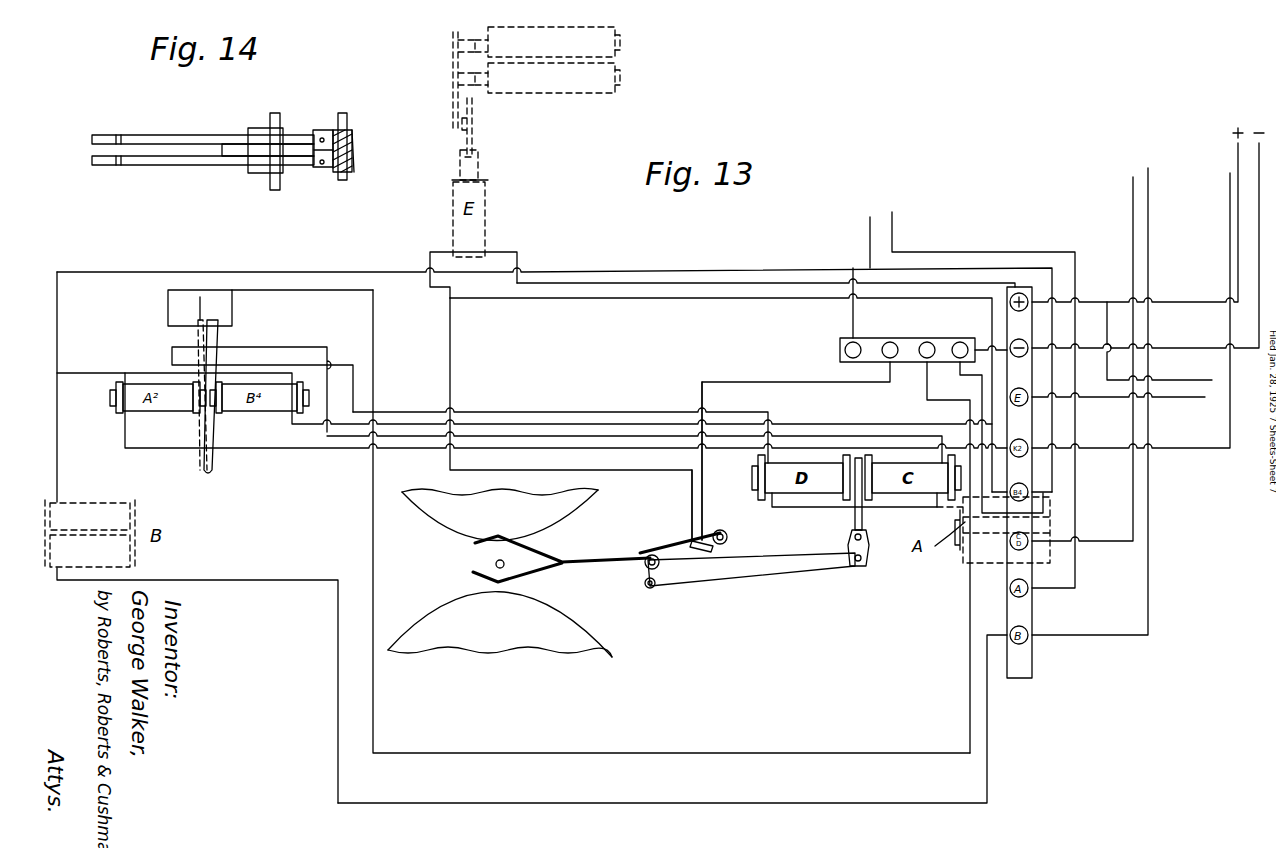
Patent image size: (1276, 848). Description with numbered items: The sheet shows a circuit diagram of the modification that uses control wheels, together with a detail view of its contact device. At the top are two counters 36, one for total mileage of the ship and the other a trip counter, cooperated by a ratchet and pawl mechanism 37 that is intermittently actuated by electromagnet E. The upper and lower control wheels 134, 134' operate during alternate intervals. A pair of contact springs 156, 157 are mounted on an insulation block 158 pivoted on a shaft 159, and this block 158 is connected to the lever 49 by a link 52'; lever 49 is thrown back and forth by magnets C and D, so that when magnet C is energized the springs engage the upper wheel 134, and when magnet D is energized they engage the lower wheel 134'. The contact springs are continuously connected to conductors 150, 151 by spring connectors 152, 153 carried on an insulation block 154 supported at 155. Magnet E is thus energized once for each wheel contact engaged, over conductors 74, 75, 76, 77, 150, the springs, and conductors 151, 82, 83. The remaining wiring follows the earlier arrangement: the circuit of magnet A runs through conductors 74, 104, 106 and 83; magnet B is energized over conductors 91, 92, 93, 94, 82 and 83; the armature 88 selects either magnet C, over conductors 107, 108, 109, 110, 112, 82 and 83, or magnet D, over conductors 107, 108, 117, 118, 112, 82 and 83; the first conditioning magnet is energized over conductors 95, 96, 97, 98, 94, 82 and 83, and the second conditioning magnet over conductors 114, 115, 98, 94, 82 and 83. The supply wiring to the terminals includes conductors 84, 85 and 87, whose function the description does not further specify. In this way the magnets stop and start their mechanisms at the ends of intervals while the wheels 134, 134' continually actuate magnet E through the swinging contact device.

In FIG. 13, the counters 36 is at (620, 42).
In FIG. 13, the ratchet and pawl mechanism 37 is at (472, 138).
In FIG. 13, the lever 49 is at (862, 518).
In FIG. 13, the link 52' is at (751, 581).
In FIG. 13, the conductor 74 is at (1238, 155).
In FIG. 13, the conductor 75 is at (1180, 302).
In FIG. 13, the conductor 76 is at (690, 283).
In FIG. 13, the conductor 77 is at (430, 255).
In FIG. 13, the conductor 82 is at (900, 348).
In FIG. 13, the conductor 83 is at (1185, 342).
In FIG. 13, the wire 84 is at (615, 298).
In FIG. 13, the wire 85 is at (1190, 374).
In FIG. 13, the wire 87 is at (1185, 400).
In FIG. 13, the armature 88 is at (218, 342).
In FIG. 13, the conductor 91 is at (1148, 600).
In FIG. 13, the conductor 92 is at (575, 803).
In FIG. 13, the conductor 93 is at (58, 470).
In FIG. 13, the conductor 94 is at (290, 272).
In FIG. 13, the conductor 95 is at (1232, 448).
In FIG. 13, the conductor 96 is at (650, 470).
In FIG. 13, the conductor 97 is at (125, 373).
In FIG. 13, the conductor 98 is at (78, 373).
In FIG. 13, the conductor 104 is at (1075, 275).
In FIG. 13, the conductor 106 is at (990, 395).
In FIG. 13, the conductor 107 is at (1115, 541).
In FIG. 13, the conductor 108 is at (690, 753).
In FIG. 13, the conductor 109 is at (168, 300).
In FIG. 13, the conductor 110 is at (488, 412).
In FIG. 13, the conductor 112 is at (940, 390).
In FIG. 13, the conductor 114 is at (870, 217).
In FIG. 13, the conductor 115 is at (545, 424).
In FIG. 13, the conductor 117 is at (225, 318).
In FIG. 13, the conductor 118 is at (295, 347).
In FIG. 13, the upper wheel 134 is at (506, 514).
In FIG. 13, the lower wheel 134' is at (521, 624).
In FIG. 14, the conductor 150 is at (340, 130).
In FIG. 13, the conductor 150 is at (692, 490).
In FIG. 14, the conductor 151 is at (322, 170).
In FIG. 13, the conductor 151 is at (702, 507).
In FIG. 14, the spring connector 152 is at (298, 132).
In FIG. 14, the spring connector 153 is at (312, 170).
In FIG. 13, the spring connector 153 is at (685, 542).
In FIG. 14, the insulation block 154 is at (352, 135).
In FIG. 13, the insulation block 154 is at (715, 548).
In FIG. 14, the support 155 is at (353, 165).
In FIG. 13, the support 155 is at (728, 537).
In FIG. 14, the contact spring 156 is at (185, 140).
In FIG. 14, the contact spring 157 is at (190, 160).
In FIG. 13, the contact spring 157 is at (548, 565).
In FIG. 14, the insulation block 158 is at (255, 130).
In FIG. 13, the insulation block 158 is at (645, 568).
In FIG. 14, the shaft 159 is at (272, 182).
In FIG. 13, the shaft 159 is at (660, 580).